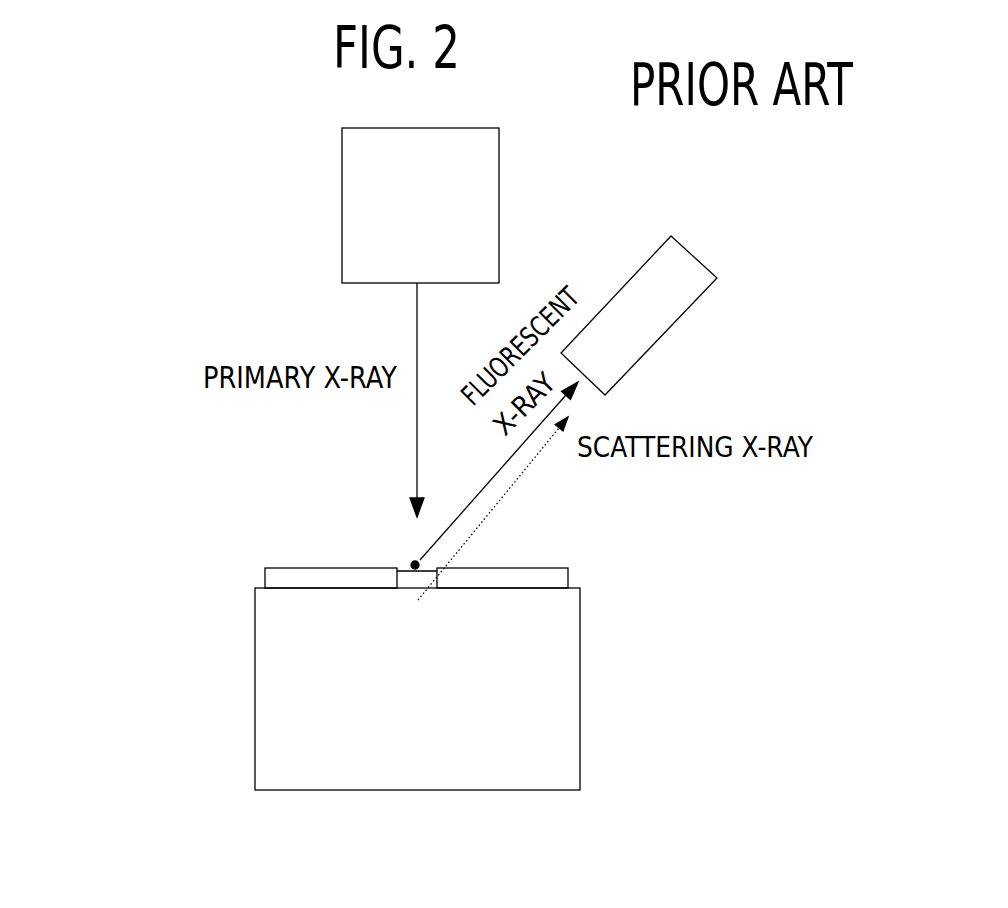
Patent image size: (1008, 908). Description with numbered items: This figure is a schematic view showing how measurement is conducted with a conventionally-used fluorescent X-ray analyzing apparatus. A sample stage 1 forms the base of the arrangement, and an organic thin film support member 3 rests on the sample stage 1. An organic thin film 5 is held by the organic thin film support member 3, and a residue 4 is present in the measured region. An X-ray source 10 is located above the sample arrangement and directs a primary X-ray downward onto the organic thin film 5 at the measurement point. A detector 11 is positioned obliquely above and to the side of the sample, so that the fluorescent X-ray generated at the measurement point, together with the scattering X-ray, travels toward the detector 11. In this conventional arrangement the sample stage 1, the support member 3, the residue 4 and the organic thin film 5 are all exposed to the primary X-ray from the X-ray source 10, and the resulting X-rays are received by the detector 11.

The sample stage 1 is at (567, 695).
The organic thin film support member 3 is at (557, 583).
The residue 4 is at (422, 562).
The organic thin film 5 is at (405, 567).
The X-ray source 10 is at (393, 240).
The detector 11 is at (651, 310).